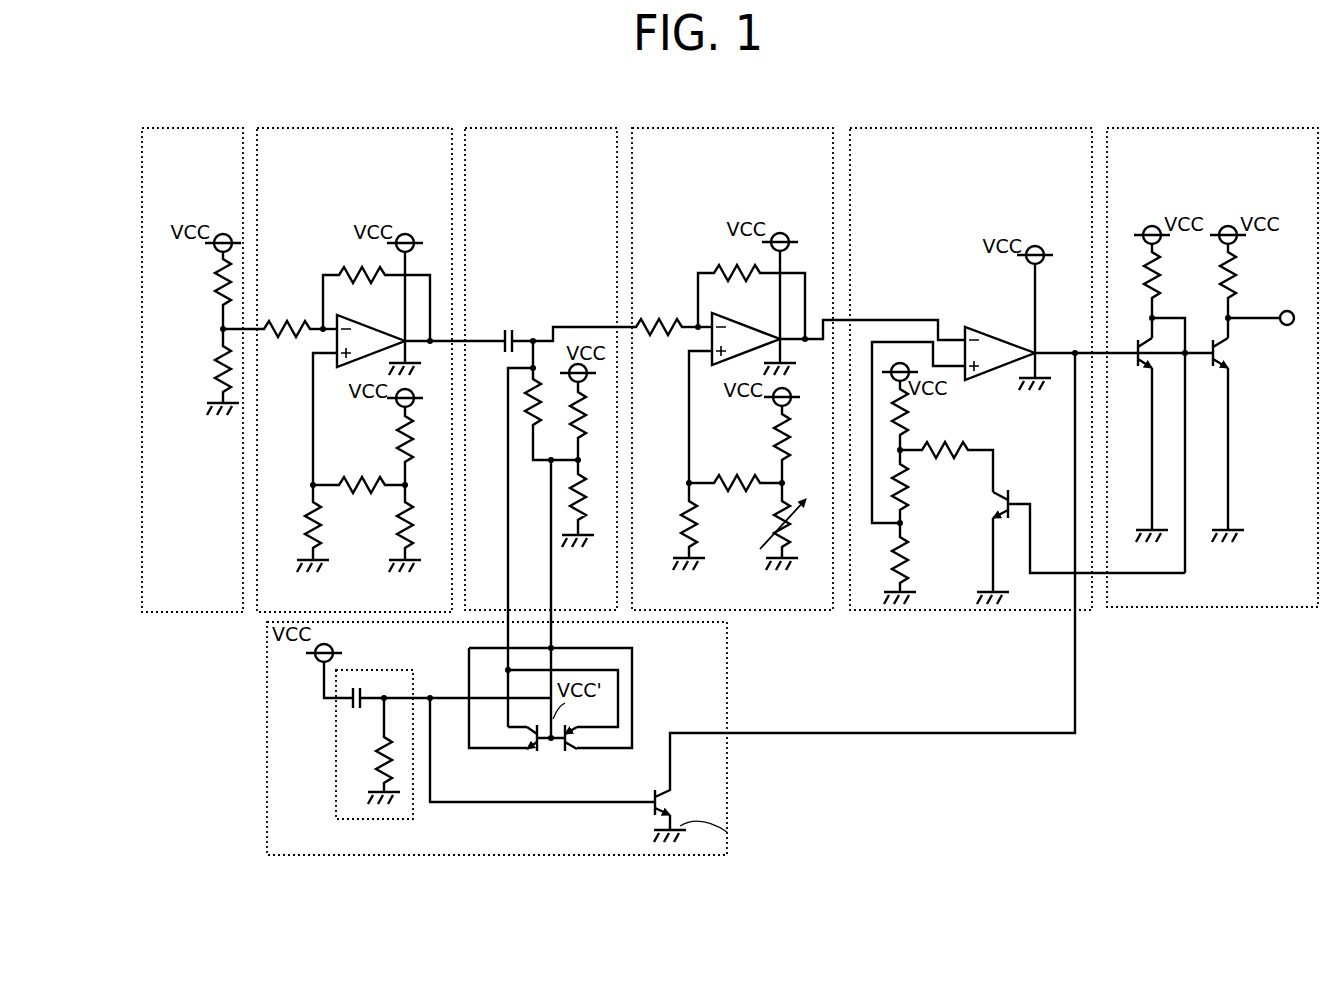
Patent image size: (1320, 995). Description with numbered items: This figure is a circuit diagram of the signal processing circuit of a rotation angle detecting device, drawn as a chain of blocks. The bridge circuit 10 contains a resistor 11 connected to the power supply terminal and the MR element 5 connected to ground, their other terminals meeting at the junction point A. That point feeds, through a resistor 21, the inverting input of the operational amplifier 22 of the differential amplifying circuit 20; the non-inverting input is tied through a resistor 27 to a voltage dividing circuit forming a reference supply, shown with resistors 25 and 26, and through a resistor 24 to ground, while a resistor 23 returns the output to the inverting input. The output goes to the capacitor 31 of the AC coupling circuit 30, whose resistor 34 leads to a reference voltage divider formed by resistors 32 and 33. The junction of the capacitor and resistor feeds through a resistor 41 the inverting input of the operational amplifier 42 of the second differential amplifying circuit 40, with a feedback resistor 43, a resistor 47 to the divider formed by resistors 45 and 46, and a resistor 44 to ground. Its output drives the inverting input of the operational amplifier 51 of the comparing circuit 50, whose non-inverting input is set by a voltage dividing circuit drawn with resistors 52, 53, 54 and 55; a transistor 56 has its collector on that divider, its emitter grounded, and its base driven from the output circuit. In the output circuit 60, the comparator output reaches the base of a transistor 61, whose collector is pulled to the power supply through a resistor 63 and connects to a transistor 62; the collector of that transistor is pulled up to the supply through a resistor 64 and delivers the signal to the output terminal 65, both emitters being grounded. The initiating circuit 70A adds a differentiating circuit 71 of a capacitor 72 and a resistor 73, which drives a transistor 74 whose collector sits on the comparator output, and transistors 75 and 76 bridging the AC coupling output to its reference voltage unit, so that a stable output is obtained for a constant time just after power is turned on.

The bridge circuit 10 is at (236, 128).
The resistor 11 is at (215, 294).
The MR element 5 is at (215, 378).
The junction point A is at (213, 329).
The differential amplifying circuit 20 is at (426, 128).
The resistor 21 is at (290, 320).
The operational amplifier 22 is at (385, 333).
The resistor 23 is at (348, 266).
The resistor 24 is at (310, 535).
The resistor 25 is at (396, 432).
The resistor 26 is at (400, 535).
The resistor 27 is at (345, 478).
The AC coupling circuit 30 is at (598, 128).
The capacitor 31 is at (505, 320).
The resistor 32 is at (570, 424).
The resistor 33 is at (588, 525).
The resistor 34 is at (533, 430).
The differential amplifying circuit 40 is at (805, 128).
The resistor 41 is at (663, 320).
The operational amplifier 42 is at (756, 330).
The resistor 43 is at (722, 266).
The resistor 44 is at (684, 534).
The resistor 45 is at (772, 432).
The variable resistor 46 is at (773, 518).
The resistor 47 is at (722, 478).
The comparing circuit 50 is at (1058, 128).
The operational amplifier 51 is at (990, 328).
The resistor 52 is at (908, 410).
The resistor 53 is at (908, 483).
The resistor 54 is at (908, 555).
The resistor 55 is at (966, 446).
The transistor 56 is at (1010, 496).
The output circuit 60 is at (1290, 128).
The transistor 61 is at (1132, 340).
The transistor 62 is at (1207, 340).
The resistor 63 is at (1162, 278).
The resistor 64 is at (1238, 278).
The output terminal 65 is at (1287, 327).
The initiating circuit 70A is at (728, 770).
The differentiating circuit 71 is at (374, 668).
The capacitor 72 is at (350, 712).
The resistor 73 is at (372, 760).
The transistor 74 is at (655, 790).
The transistor 75 is at (532, 753).
The transistor 76 is at (575, 753).